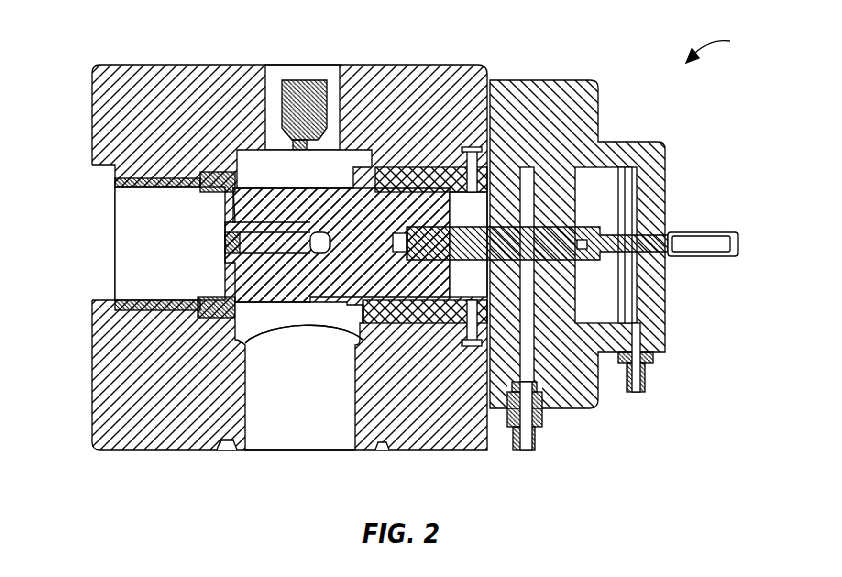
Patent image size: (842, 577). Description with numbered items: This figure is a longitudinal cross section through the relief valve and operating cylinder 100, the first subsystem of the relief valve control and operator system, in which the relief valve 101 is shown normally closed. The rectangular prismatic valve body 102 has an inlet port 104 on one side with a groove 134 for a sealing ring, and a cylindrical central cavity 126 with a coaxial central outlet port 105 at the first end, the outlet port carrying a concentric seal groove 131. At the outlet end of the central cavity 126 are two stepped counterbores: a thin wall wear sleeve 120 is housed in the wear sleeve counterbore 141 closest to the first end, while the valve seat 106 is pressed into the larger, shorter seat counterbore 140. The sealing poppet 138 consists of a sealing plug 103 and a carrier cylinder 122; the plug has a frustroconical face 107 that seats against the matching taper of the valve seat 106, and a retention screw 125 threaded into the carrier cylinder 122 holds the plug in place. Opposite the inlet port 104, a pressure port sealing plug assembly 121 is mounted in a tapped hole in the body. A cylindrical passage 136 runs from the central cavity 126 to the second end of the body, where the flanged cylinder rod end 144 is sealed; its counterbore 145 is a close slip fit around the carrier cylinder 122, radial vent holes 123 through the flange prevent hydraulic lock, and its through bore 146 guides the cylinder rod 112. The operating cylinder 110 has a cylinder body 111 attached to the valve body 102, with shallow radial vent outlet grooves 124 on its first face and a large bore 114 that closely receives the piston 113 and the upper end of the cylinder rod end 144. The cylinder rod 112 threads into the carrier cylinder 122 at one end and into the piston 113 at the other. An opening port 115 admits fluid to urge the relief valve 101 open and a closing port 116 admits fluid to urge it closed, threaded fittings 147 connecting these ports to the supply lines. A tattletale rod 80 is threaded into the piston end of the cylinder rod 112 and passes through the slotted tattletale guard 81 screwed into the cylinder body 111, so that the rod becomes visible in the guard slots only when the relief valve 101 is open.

The relief valve and operating cylinder 100 is at (734, 46).
The relief valve 101 is at (126, 65).
The valve body 102 is at (92, 98).
The sealing plug 103 is at (255, 150).
The inlet port 104 is at (258, 450).
The outlet port 105 is at (92, 204).
The valve seat 106 is at (200, 298).
The frustroconical face 107 is at (230, 188).
The operating cylinder 110 is at (483, 300).
The cylinder body 111 is at (550, 80).
The cylinder rod 112 is at (500, 190).
The piston 113 is at (580, 287).
The large bore 114 is at (608, 145).
The opening port 115 is at (577, 408).
The closing port 116 is at (640, 317).
The wear sleeve 120 is at (152, 318).
The pressure port sealing plug assembly 121 is at (303, 82).
The carrier cylinder 122 is at (378, 170).
The radial vent holes 123 is at (470, 147).
The radial vent outlet grooves 124 is at (485, 330).
The retention screw 125 is at (225, 242).
The cylindrical central cavity 126 is at (268, 150).
The seal groove 131 is at (92, 320).
The groove 134 is at (378, 448).
The cylindrical passage 136 is at (398, 167).
The sealing poppet 138 is at (298, 322).
The seat counterbore 140 is at (202, 172).
The wear sleeve counterbore 141 is at (135, 178).
The cylinder rod end 144 is at (436, 167).
The counterbore 145 is at (413, 323).
The through bore 146 is at (468, 322).
The threaded fittings 147 is at (652, 374).
The tattletale rod 80 is at (615, 233).
The tattletale guard 81 is at (703, 262).